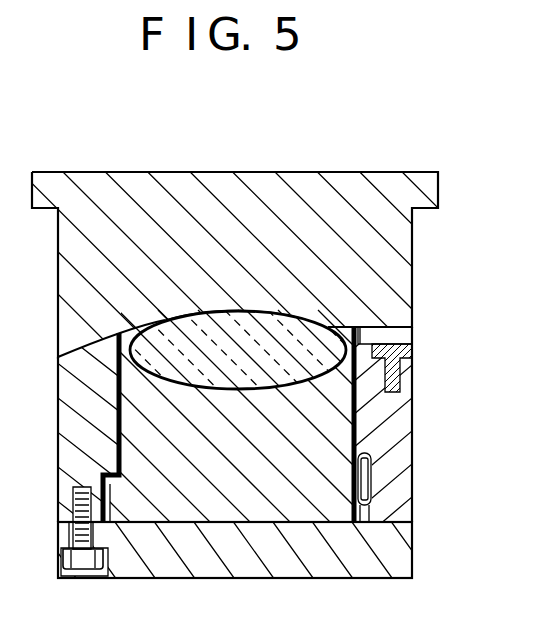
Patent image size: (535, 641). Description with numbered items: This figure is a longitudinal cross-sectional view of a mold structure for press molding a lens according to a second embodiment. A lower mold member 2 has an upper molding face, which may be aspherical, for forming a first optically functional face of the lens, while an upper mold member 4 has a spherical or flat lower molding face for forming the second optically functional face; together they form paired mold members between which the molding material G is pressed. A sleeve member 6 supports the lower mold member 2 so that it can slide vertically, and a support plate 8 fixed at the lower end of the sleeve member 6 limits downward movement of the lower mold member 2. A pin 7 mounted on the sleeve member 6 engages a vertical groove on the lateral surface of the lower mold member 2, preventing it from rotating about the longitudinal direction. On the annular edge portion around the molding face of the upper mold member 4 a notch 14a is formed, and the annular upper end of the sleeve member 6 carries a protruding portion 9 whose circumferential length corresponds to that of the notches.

The upper mold member 4 is at (376, 272).
The lower mold member 2 is at (330, 420).
The sleeve member 6 is at (383, 447).
The notch 14a is at (392, 328).
The protruding portion 9 is at (398, 373).
The pin 7 is at (362, 470).
The support plate 8 is at (390, 551).
The molding material G is at (200, 312).